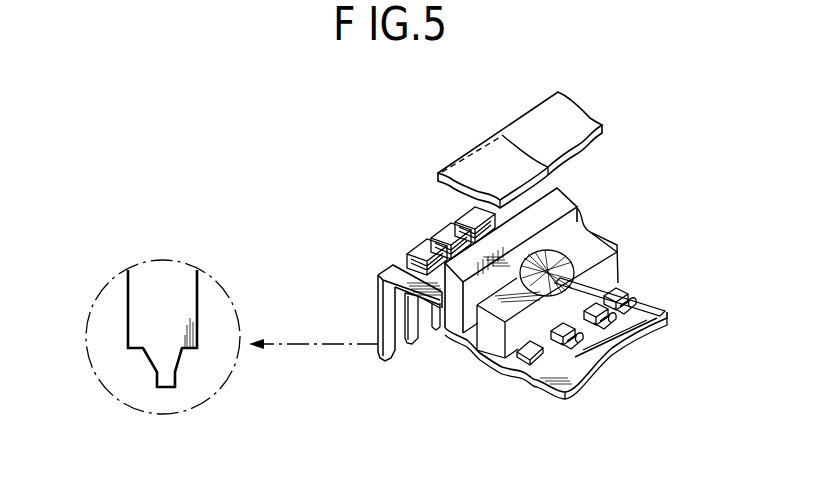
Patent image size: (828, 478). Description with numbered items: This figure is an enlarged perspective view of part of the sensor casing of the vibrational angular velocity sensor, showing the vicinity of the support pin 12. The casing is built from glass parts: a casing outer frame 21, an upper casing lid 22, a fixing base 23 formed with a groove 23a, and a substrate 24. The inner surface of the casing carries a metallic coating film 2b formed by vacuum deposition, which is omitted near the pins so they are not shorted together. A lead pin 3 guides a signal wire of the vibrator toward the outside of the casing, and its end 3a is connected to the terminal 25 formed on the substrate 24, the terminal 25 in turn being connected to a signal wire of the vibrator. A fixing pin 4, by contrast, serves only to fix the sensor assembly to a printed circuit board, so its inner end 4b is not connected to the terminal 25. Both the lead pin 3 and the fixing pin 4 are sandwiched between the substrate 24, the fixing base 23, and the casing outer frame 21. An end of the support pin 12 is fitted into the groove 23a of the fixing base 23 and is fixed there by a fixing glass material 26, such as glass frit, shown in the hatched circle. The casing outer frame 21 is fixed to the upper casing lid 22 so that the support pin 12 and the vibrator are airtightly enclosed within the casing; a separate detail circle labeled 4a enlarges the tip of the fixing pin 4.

The metallic coating film 2b is at (553, 138).
The upper casing lid 22 is at (602, 121).
The casing outer frame 21 is at (539, 248).
The fixing glass material 26 is at (603, 245).
The fixing base 23 is at (612, 240).
The groove 23a is at (573, 283).
The support pin 12 is at (647, 314).
The terminal 25 is at (623, 352).
The end of the lead pin 3a is at (573, 350).
The inner end of the fixing pin 4b is at (523, 355).
The substrate 24 is at (540, 380).
The lead pin 3 is at (418, 250).
The fixing pin 4 is at (398, 268).
The pin tip 4a is at (140, 356).